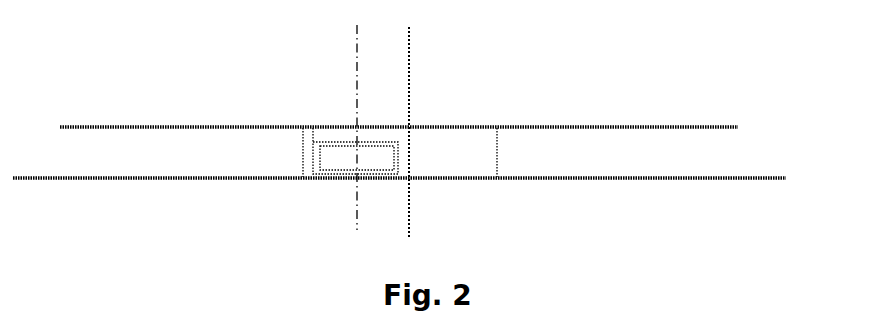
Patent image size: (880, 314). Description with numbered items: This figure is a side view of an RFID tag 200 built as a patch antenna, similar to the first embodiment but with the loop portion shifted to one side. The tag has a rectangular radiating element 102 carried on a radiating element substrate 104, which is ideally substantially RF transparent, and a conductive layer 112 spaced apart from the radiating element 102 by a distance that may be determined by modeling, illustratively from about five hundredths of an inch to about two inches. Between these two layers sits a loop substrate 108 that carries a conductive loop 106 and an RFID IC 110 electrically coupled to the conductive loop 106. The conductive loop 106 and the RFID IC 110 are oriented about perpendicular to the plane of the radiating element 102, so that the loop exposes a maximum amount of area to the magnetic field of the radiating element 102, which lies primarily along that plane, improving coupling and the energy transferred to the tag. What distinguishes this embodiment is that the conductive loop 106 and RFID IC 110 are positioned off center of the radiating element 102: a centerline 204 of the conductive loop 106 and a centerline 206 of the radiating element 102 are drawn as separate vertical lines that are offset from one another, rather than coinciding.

The RFID tag 200 is at (76, 59).
The radiating element 102 is at (456, 108).
The radiating element substrate 104 is at (548, 126).
The conductive loop 106 is at (316, 148).
The loop substrate 108 is at (462, 150).
The RFID IC 110 is at (390, 160).
The conductive layer 112 is at (140, 179).
The centerline of the conductive loop 204 is at (357, 117).
The centerline of the radiating element 206 is at (409, 121).